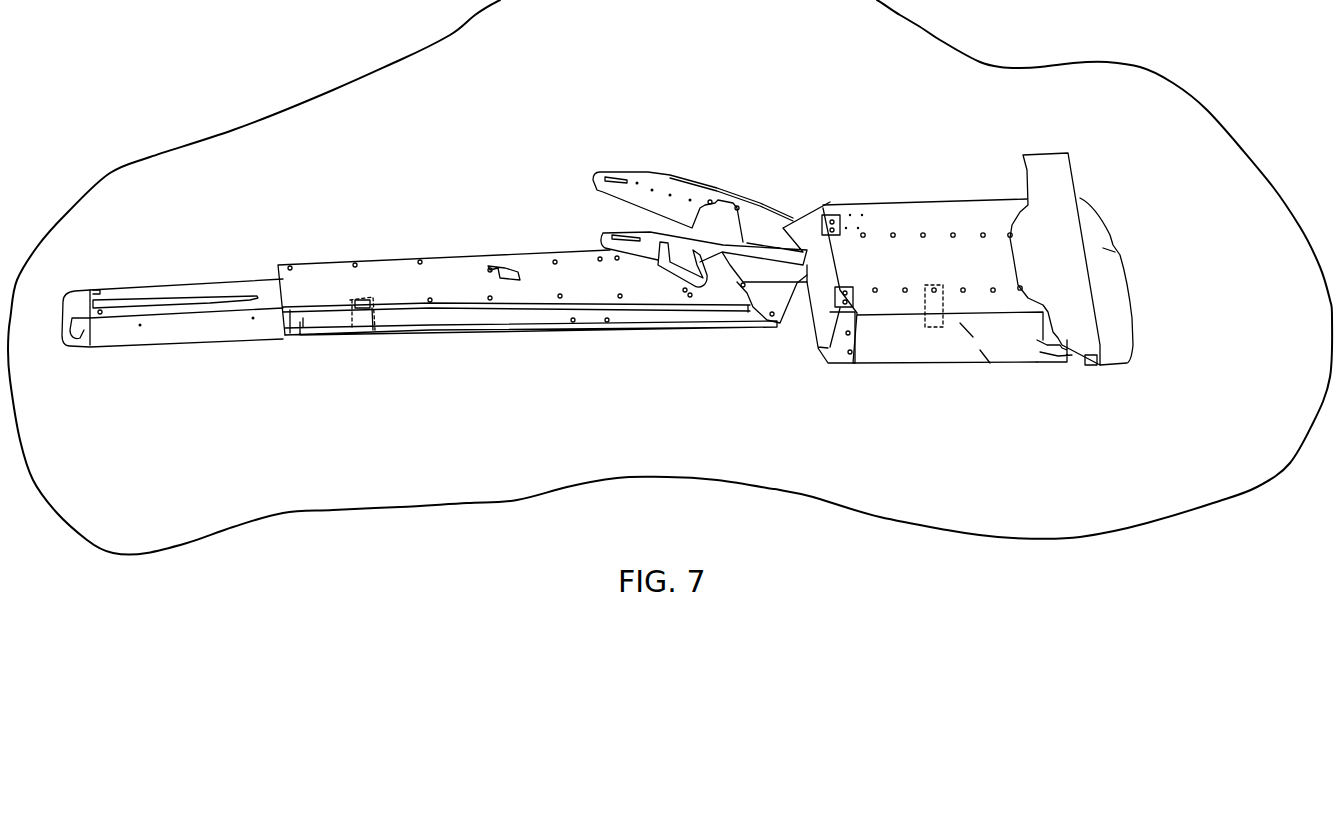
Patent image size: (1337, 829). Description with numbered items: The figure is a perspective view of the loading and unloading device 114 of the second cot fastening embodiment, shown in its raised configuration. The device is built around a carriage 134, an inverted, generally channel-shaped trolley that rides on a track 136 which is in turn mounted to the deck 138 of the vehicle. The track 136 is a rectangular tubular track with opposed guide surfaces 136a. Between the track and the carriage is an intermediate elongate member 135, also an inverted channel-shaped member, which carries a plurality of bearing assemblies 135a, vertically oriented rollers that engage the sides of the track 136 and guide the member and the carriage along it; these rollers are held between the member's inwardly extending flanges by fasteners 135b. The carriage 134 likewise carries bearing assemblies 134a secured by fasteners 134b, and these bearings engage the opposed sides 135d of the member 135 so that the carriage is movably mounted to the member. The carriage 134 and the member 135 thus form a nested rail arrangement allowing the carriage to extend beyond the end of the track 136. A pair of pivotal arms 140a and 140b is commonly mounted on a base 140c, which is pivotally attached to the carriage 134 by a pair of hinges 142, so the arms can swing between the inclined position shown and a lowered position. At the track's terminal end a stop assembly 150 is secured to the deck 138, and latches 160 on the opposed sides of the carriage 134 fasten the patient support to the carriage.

The loading and unloading device 114 is at (716, 80).
The carriage 134 is at (947, 197).
The bearing assemblies 134a is at (1007, 380).
The fasteners 134b is at (932, 287).
The intermediate elongate member 135 is at (479, 252).
The bearing assemblies 135a is at (335, 360).
The fasteners 135b is at (372, 332).
The opposed sides 135d is at (502, 313).
The track 136 is at (232, 335).
The guide surfaces 136a is at (170, 337).
The deck 138 is at (222, 507).
The pivotal arm 140a is at (643, 253).
The pivotal arm 140b is at (668, 178).
The base 140c is at (803, 313).
The hinges 142 is at (824, 205).
The stop assembly 150 is at (1144, 302).
The latch 160 is at (1096, 362).